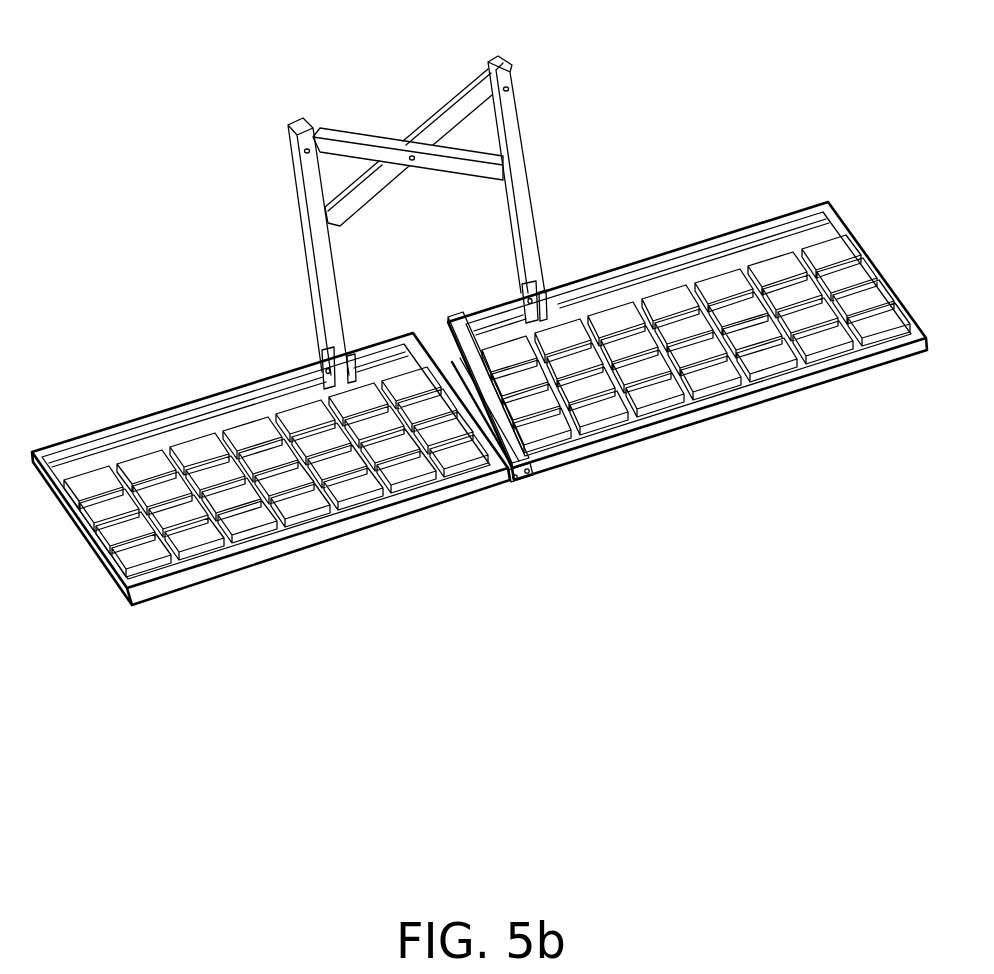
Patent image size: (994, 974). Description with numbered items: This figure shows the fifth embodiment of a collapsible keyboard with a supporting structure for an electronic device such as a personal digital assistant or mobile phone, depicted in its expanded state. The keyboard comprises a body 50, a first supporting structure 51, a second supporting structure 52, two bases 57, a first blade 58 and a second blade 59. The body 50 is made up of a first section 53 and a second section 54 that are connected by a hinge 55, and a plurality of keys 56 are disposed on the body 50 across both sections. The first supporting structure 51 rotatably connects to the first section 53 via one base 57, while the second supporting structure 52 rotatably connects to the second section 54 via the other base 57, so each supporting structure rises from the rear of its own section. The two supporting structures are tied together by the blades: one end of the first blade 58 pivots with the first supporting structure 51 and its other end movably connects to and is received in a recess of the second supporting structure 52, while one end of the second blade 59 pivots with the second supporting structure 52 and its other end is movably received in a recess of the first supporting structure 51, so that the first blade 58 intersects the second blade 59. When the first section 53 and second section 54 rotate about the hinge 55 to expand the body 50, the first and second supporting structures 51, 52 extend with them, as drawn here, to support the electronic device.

The body 50 is at (637, 632).
The first supporting structure 51 is at (320, 244).
The second supporting structure 52 is at (527, 188).
The first section 53 is at (462, 510).
The second section 54 is at (620, 457).
The hinge 55 is at (533, 480).
The keys 56 is at (243, 533).
The base 57 is at (323, 372).
The first blade 58 is at (357, 148).
The second blade 59 is at (453, 113).